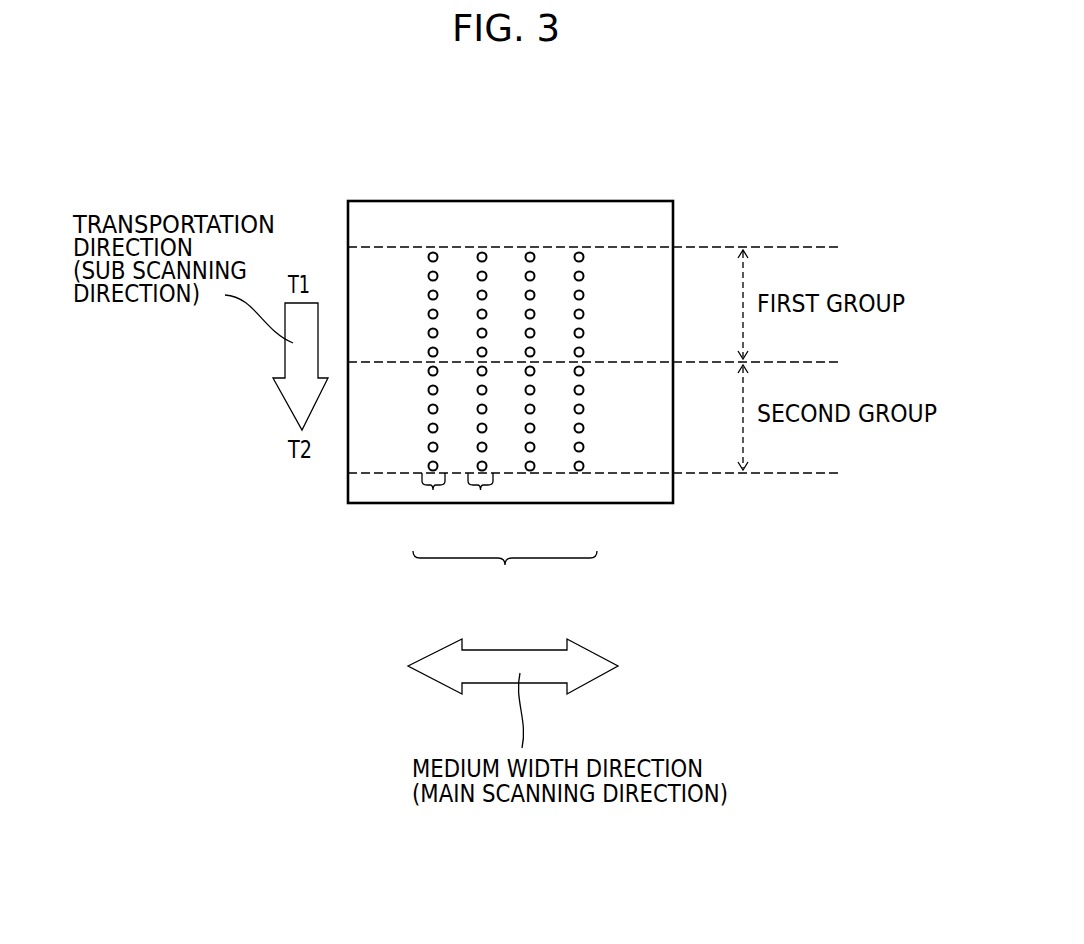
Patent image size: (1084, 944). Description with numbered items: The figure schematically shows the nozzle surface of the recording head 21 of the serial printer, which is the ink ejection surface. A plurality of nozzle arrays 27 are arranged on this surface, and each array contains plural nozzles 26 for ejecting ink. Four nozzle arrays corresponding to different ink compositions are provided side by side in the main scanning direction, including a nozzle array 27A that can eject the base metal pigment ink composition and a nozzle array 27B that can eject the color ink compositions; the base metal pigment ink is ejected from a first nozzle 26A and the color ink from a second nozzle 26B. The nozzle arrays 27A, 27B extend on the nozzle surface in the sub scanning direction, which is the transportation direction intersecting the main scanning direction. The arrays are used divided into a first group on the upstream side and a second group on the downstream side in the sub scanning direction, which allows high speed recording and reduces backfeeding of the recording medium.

The recording head 21 is at (646, 170).
The nozzles 26 is at (534, 298).
The first nozzle 26A is at (433, 251).
The second nozzle 26B is at (482, 252).
The nozzle arrays 27 is at (505, 577).
The nozzle array 27A is at (433, 490).
The nozzle array 27B is at (480, 490).